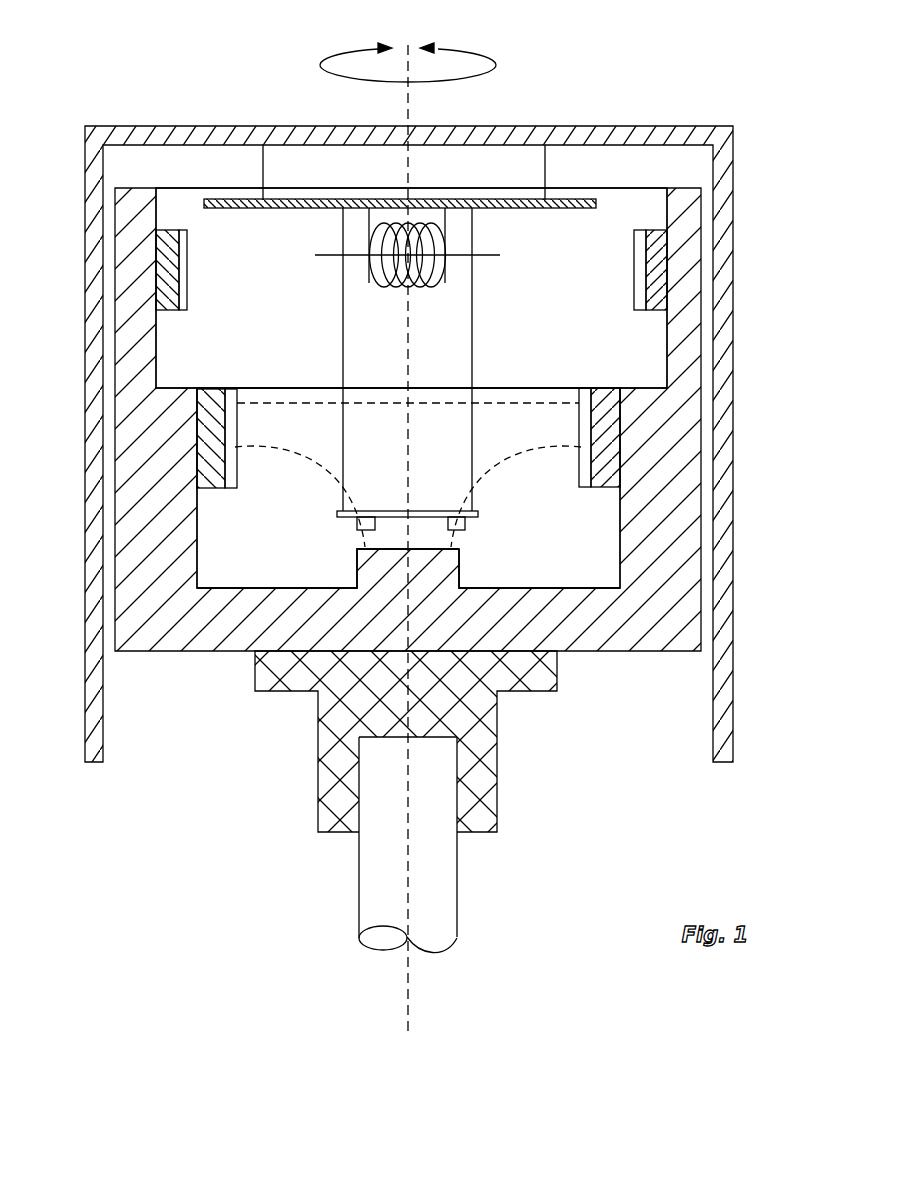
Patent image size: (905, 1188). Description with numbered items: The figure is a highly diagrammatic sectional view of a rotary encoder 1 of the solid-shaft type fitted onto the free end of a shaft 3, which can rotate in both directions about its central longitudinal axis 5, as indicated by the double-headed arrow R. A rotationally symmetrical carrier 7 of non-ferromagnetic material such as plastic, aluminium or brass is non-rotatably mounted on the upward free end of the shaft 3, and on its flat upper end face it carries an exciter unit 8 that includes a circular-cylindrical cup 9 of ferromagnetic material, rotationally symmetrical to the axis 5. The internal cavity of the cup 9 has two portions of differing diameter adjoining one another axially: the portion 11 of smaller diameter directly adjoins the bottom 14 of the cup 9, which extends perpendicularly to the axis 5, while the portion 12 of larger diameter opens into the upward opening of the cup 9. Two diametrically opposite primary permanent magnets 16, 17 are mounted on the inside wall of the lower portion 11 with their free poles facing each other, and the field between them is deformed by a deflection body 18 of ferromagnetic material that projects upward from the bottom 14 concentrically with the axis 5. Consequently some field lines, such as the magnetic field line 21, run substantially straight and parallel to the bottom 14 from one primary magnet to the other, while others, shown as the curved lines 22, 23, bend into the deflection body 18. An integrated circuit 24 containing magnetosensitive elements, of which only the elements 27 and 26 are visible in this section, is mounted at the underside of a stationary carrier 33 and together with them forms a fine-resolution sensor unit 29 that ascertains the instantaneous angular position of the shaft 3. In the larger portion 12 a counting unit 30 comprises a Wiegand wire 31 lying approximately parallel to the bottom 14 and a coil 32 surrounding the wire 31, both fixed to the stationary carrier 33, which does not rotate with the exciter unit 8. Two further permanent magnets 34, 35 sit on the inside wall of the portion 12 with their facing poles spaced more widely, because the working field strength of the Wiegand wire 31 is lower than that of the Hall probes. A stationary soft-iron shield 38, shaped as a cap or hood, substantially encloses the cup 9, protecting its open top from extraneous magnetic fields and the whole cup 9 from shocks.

The rotary encoder 1 is at (768, 262).
The shaft 3 is at (445, 910).
The central longitudinal axis 5 is at (410, 1002).
The carrier 7 is at (497, 825).
The exciter unit 8 is at (692, 567).
The cup 9 is at (627, 520).
The portion of smaller diameter 11 is at (216, 543).
The portion of larger diameter 12 is at (262, 337).
The bottom 14 is at (510, 587).
The primary permanent magnet 16 is at (612, 393).
The primary permanent magnet 17 is at (208, 397).
The deflection body 18 is at (360, 577).
The magnetic field line 21 is at (365, 400).
The curved field line 22 is at (320, 470).
The curved field line 23 is at (490, 480).
The integrated circuit 24 is at (380, 509).
The magnetosensitive element 26 is at (477, 523).
The magnetosensitive element 27 is at (337, 520).
The sensor unit 29 is at (439, 485).
The counting unit 30 is at (500, 238).
The Wiegand wire 31 is at (480, 257).
The coil 32 is at (368, 279).
The carrier 33 is at (559, 202).
The further permanent magnet 34 is at (182, 278).
The further permanent magnet 35 is at (638, 282).
The shield 38 is at (263, 127).
The double-headed arrow R is at (467, 52).